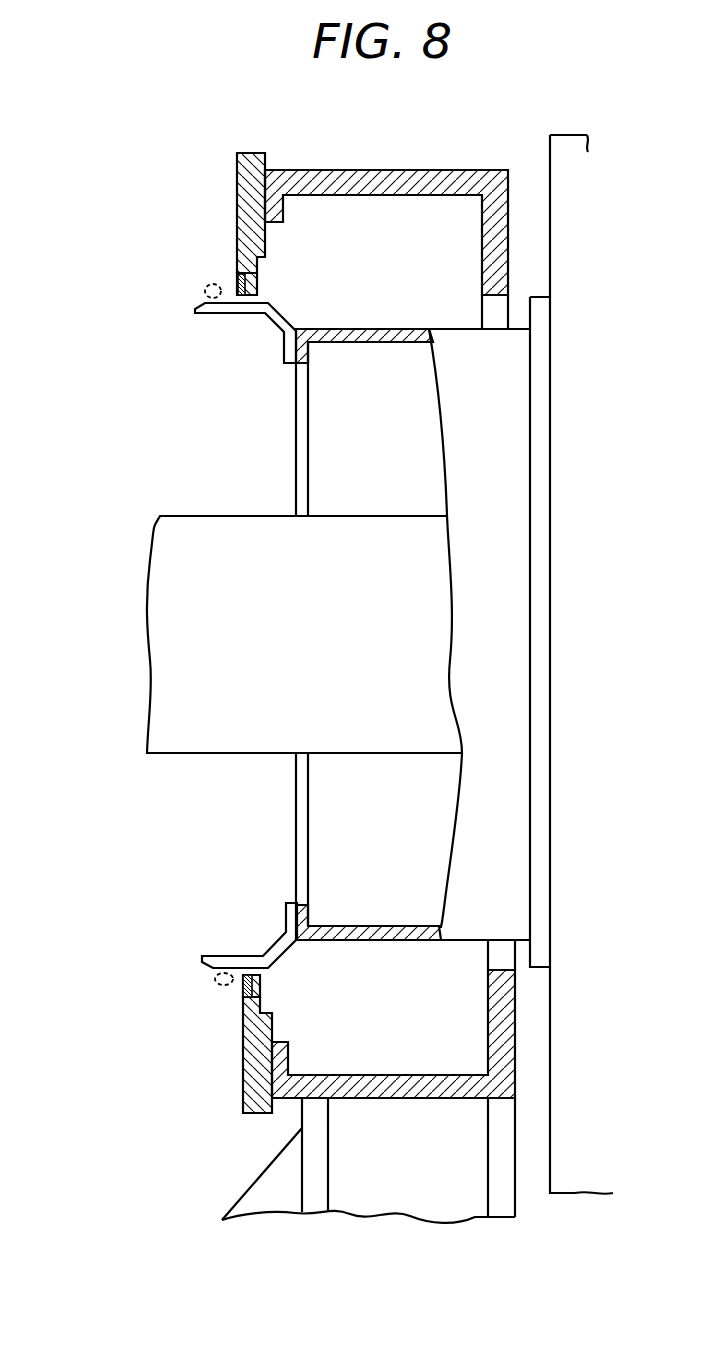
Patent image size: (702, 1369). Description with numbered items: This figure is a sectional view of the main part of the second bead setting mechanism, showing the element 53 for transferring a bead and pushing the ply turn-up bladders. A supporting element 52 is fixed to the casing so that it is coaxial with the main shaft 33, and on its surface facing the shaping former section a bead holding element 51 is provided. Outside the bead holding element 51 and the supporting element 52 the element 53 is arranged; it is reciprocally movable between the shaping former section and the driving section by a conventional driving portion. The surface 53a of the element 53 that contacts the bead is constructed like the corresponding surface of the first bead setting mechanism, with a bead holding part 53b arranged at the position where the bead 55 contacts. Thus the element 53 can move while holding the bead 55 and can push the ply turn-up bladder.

The main shaft 33 is at (200, 747).
The bead holding element 51 is at (230, 313).
The supporting element 52 is at (395, 328).
The element for transferring a bead and pushing ply turn-up bladders 53 is at (392, 170).
The surface contacting with the bead 53a is at (237, 170).
The bead holding part 53b is at (236, 290).
The bead 55 is at (207, 285).